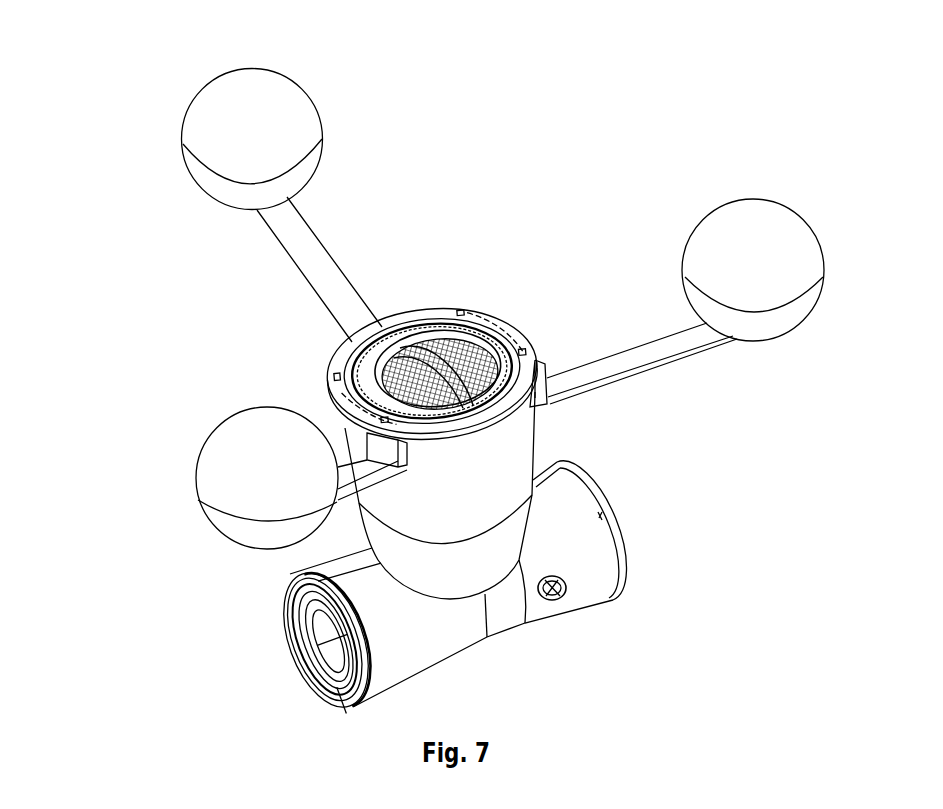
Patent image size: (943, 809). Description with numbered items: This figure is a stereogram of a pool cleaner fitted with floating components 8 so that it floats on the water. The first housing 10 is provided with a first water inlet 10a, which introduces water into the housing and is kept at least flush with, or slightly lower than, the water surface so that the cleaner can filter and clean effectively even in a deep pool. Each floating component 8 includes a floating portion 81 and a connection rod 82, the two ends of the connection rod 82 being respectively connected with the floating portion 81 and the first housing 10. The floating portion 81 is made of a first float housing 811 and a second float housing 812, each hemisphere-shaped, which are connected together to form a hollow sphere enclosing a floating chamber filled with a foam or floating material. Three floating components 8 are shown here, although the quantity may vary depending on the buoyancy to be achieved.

The floating component 8 is at (436, 277).
The floating portion 81 is at (183, 139).
The first float housing 811 is at (187, 144).
The second float housing 812 is at (211, 190).
The connection rod 82 is at (287, 254).
The first housing 10 is at (448, 462).
The first water inlet 10a is at (455, 335).